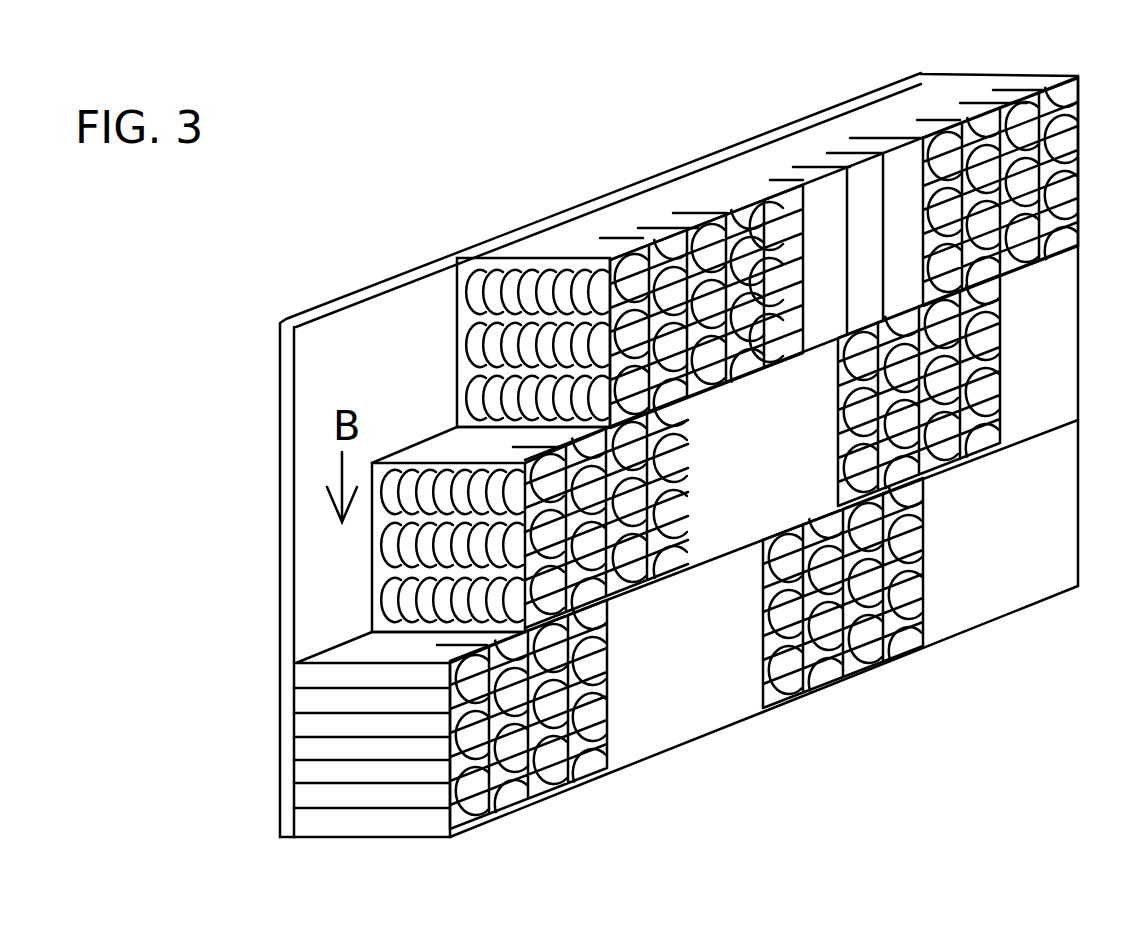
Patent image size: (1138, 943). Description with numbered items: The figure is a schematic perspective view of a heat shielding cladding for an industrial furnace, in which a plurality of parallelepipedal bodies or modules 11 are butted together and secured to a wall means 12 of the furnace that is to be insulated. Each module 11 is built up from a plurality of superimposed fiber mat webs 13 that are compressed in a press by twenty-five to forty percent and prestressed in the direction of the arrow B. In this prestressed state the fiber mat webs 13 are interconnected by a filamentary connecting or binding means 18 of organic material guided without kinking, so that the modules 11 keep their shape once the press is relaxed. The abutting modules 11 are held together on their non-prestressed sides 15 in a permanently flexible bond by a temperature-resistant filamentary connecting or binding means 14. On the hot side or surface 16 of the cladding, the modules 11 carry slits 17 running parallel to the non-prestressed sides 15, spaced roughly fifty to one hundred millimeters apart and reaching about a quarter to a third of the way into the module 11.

The module 11 is at (580, 230).
The wall means 12 is at (370, 340).
The fiber mat web 13 is at (332, 797).
The temperature-resistant filamentary connecting or binding means 14 is at (505, 305).
The non-prestressed side 15 is at (383, 572).
The hot side or surface 16 is at (677, 652).
The slit 17 is at (607, 767).
The filamentary connecting or binding means of organic material 18 is at (892, 657).